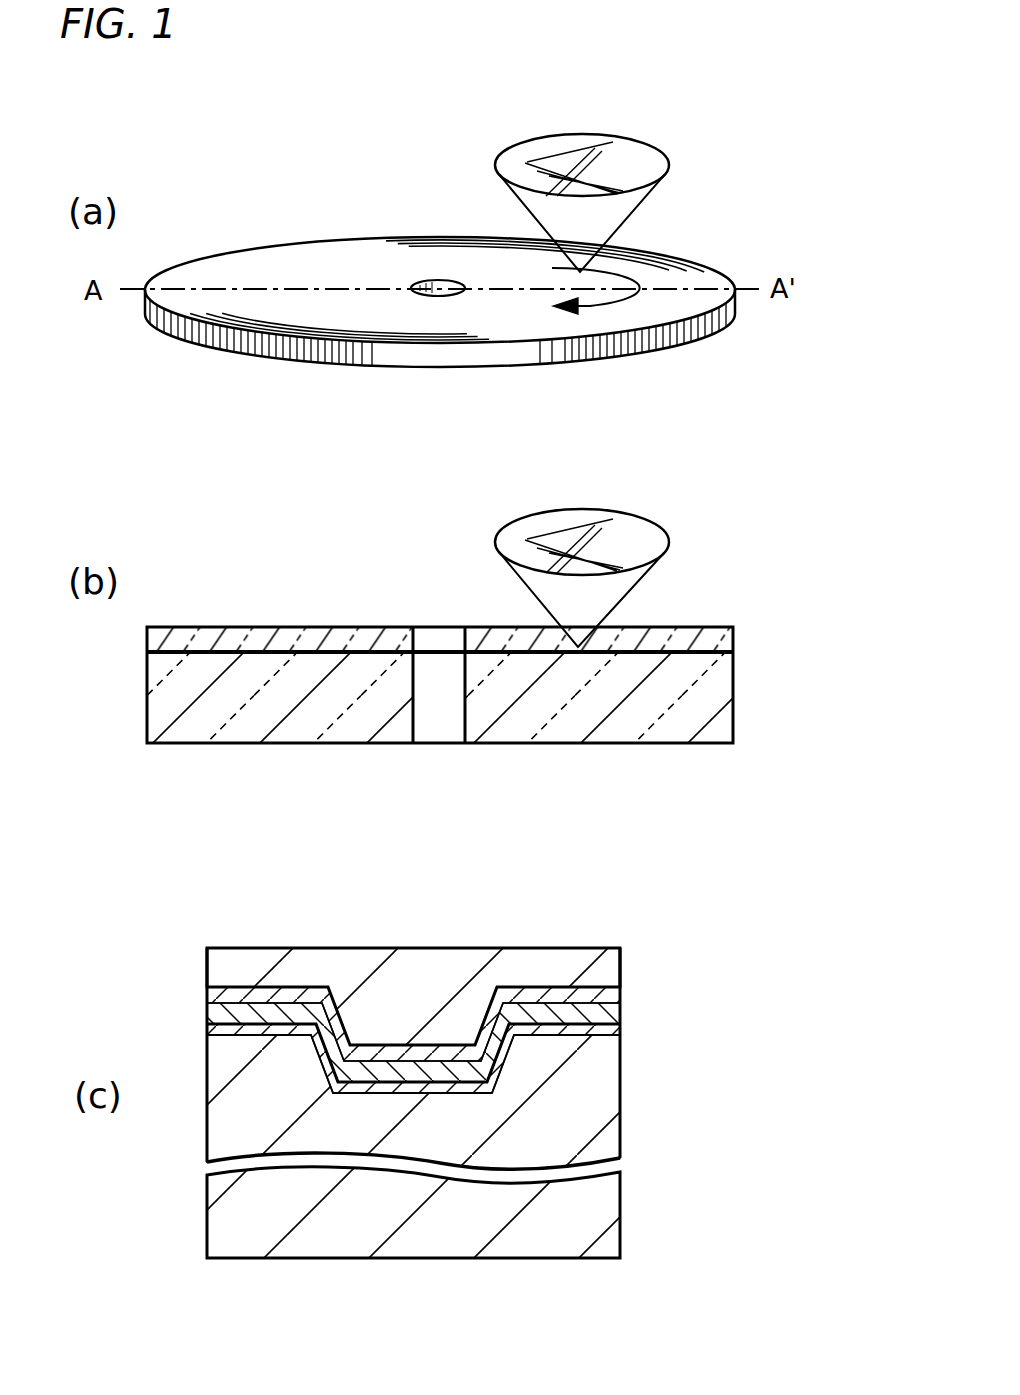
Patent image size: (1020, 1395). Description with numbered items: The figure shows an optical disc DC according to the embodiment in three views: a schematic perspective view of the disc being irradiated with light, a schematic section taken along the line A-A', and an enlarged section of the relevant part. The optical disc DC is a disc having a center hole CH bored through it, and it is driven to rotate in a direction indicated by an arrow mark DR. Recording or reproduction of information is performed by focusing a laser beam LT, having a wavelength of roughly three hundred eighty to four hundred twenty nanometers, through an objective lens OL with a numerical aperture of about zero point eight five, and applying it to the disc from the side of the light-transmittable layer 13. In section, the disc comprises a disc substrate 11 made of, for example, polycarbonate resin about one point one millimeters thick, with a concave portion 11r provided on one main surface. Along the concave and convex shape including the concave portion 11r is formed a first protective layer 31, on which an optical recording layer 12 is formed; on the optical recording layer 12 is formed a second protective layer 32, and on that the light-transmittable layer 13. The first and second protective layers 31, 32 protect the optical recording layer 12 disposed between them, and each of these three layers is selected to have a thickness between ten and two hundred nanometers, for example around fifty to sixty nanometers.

The optical disc DC is at (253, 267).
The center hole CH is at (426, 280).
The objective lens OL is at (582, 147).
The laser beam LT is at (636, 212).
The arrow mark DR is at (592, 306).
The disc substrate 11 is at (705, 722).
The concave portion 11r is at (442, 1080).
The optical recording layer 12 is at (735, 653).
The light-transmittable layer 13 is at (712, 625).
The first protective layer 31 is at (605, 1033).
The second protective layer 32 is at (612, 993).